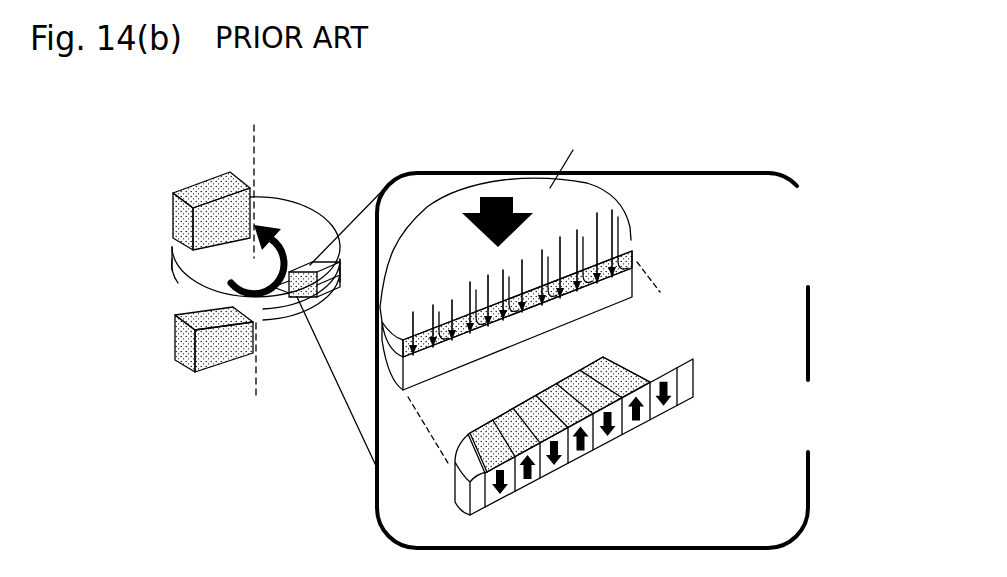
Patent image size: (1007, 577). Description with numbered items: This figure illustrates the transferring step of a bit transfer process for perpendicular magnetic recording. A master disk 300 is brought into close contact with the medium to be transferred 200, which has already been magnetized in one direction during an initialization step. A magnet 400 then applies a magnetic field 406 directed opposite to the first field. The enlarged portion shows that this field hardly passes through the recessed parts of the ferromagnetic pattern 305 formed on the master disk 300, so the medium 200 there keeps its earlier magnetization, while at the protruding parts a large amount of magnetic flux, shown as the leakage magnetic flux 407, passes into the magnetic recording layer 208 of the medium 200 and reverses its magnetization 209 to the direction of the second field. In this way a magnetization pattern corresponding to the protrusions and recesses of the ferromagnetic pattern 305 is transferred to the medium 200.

The magnet 400 is at (176, 316).
The master disk 300 is at (247, 303).
The medium to be transferred 200 is at (268, 318).
The magnetic field 406 is at (541, 206).
The leakage magnetic flux 407 is at (628, 237).
The ferromagnetic pattern 305 is at (522, 318).
The magnetic recording layer 208 is at (697, 380).
The magnetization 209 is at (615, 432).